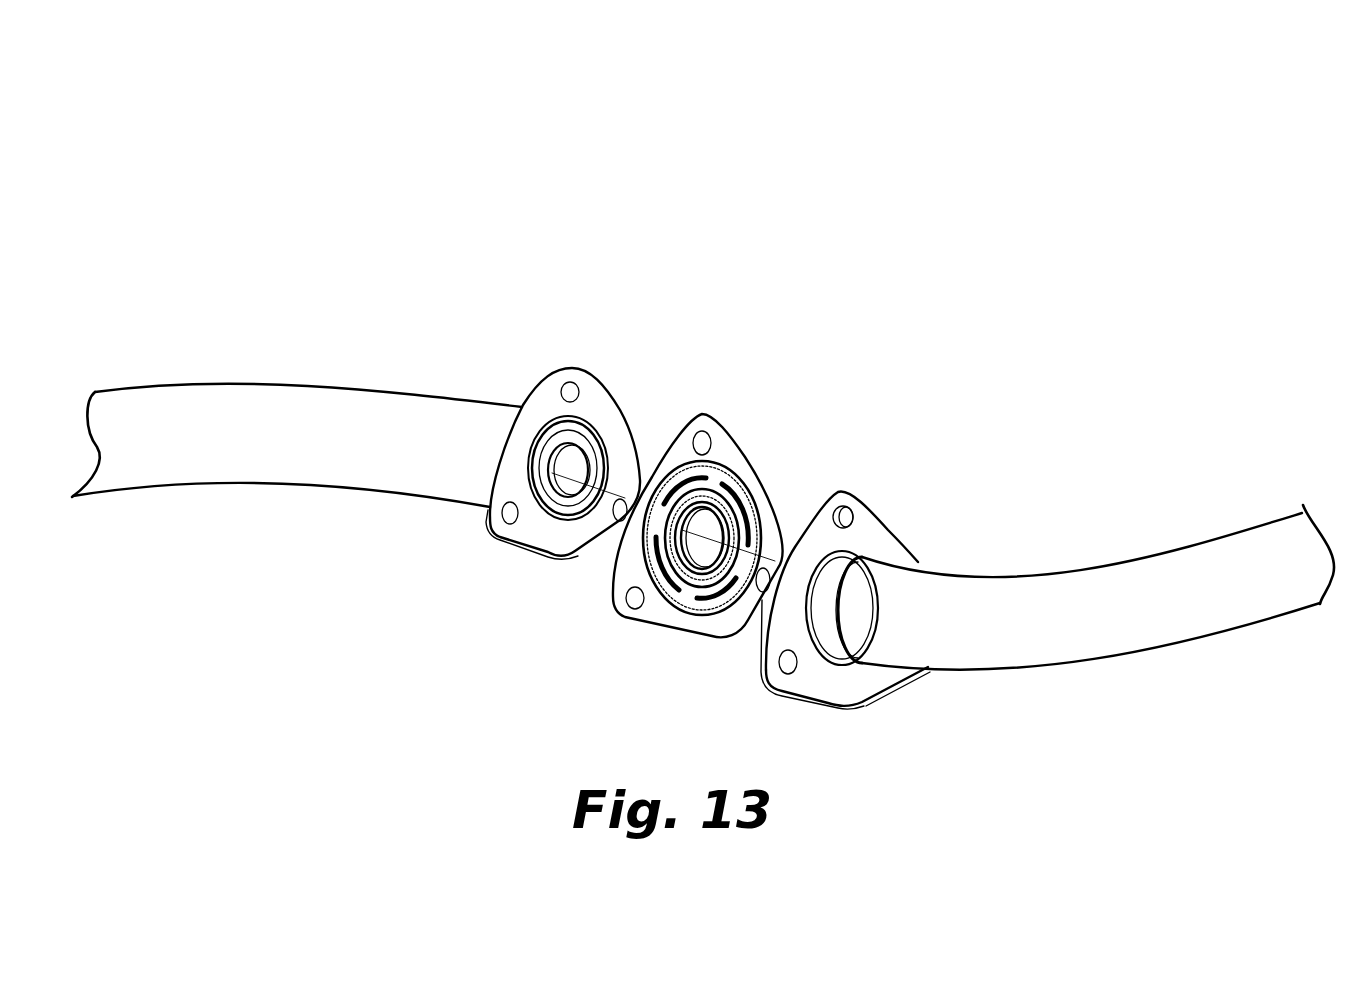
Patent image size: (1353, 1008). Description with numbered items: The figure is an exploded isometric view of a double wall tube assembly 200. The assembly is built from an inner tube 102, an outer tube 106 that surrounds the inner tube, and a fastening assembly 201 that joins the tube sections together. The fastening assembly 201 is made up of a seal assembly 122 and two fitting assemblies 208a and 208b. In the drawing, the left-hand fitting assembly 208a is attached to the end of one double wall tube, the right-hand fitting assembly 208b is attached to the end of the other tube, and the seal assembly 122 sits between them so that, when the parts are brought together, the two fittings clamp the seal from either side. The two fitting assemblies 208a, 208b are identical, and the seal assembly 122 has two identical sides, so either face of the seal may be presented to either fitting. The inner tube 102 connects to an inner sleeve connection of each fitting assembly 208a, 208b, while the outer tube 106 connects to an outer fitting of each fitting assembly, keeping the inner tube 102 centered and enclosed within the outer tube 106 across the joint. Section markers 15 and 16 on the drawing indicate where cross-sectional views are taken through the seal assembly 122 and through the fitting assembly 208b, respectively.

The double wall tube assembly 200 is at (292, 196).
The outer tube 106 is at (277, 403).
The fitting assembly 208a is at (543, 412).
The inner tube 102 is at (580, 450).
The fastening assembly 201 is at (763, 378).
The seal assembly 122 is at (733, 462).
The fitting assembly 208b is at (870, 540).
The section line 15- 15 is at (702, 643).
The section line 16- 16 is at (841, 710).